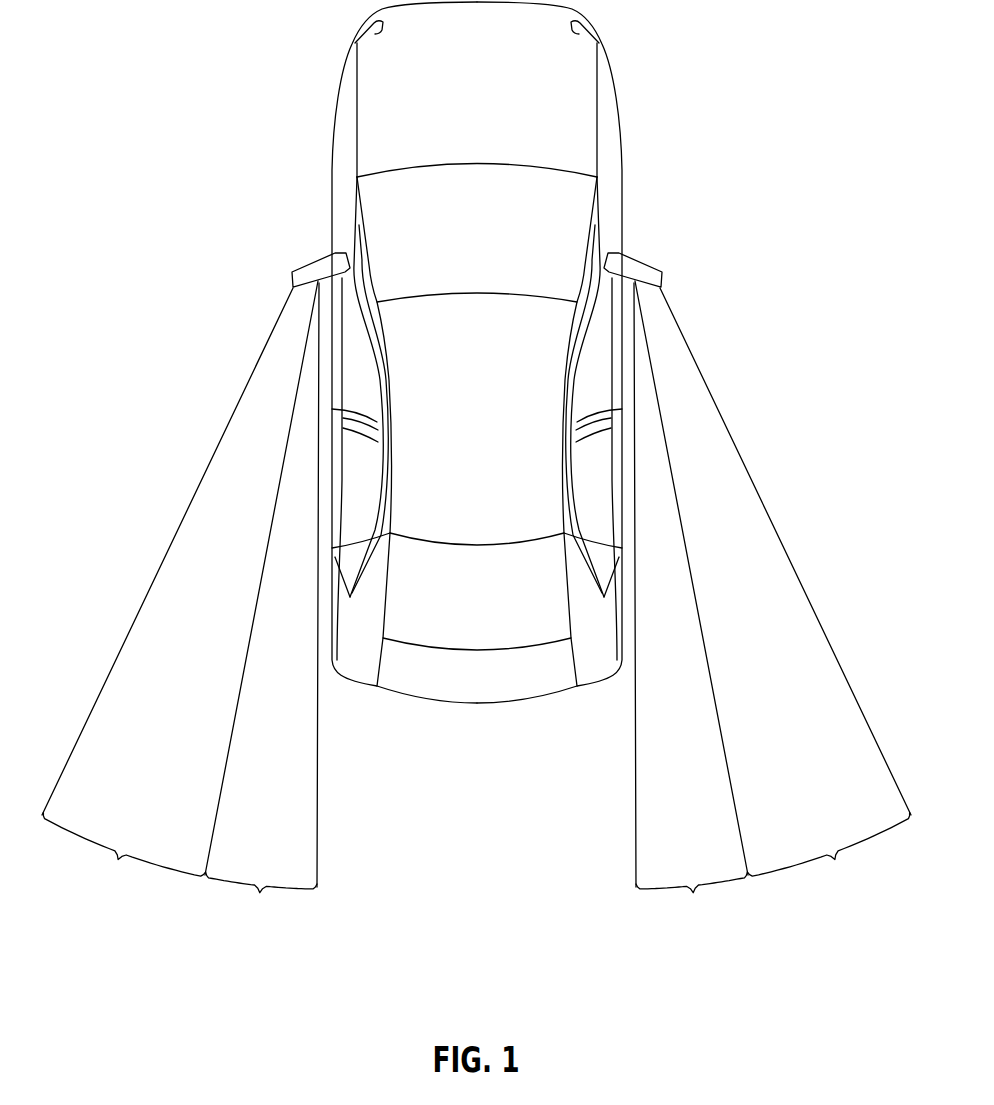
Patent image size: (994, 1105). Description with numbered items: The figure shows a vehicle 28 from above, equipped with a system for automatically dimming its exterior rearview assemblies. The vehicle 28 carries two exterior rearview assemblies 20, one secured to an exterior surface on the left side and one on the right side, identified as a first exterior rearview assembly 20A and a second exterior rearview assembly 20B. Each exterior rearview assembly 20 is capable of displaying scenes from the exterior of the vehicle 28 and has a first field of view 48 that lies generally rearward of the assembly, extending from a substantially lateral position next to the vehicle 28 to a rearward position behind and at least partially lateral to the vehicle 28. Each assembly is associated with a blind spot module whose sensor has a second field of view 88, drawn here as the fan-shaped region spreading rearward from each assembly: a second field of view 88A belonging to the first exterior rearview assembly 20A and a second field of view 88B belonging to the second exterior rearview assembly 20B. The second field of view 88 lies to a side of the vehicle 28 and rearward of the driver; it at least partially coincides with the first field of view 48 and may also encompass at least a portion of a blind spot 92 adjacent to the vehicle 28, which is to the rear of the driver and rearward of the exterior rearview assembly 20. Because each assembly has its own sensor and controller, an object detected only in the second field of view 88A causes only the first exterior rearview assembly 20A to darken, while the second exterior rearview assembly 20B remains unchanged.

The vehicle 28 is at (620, 138).
The exterior rearview assembly 20 is at (474, 264).
The first exterior rearview assembly 20A is at (297, 268).
The second exterior rearview assembly 20B is at (648, 267).
The second field of view 88 is at (477, 626).
The second field of view of the first exterior rearview assembly 88A is at (317, 939).
The second field of view of the second exterior rearview assembly 88B is at (783, 626).
The first field of view 48 is at (476, 852).
The blind spot 92 is at (477, 897).